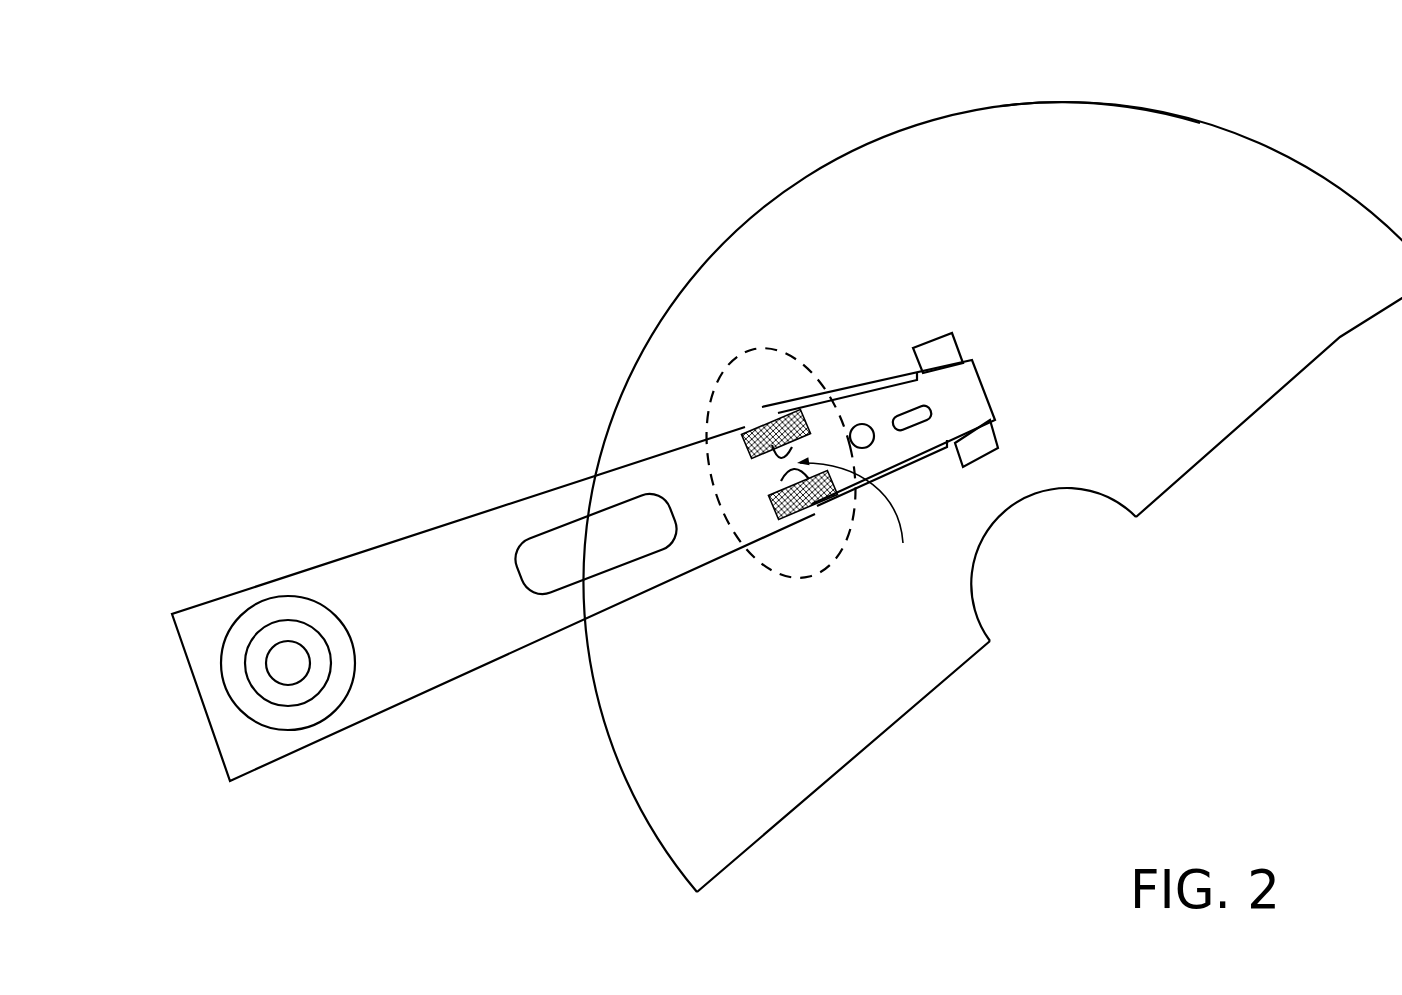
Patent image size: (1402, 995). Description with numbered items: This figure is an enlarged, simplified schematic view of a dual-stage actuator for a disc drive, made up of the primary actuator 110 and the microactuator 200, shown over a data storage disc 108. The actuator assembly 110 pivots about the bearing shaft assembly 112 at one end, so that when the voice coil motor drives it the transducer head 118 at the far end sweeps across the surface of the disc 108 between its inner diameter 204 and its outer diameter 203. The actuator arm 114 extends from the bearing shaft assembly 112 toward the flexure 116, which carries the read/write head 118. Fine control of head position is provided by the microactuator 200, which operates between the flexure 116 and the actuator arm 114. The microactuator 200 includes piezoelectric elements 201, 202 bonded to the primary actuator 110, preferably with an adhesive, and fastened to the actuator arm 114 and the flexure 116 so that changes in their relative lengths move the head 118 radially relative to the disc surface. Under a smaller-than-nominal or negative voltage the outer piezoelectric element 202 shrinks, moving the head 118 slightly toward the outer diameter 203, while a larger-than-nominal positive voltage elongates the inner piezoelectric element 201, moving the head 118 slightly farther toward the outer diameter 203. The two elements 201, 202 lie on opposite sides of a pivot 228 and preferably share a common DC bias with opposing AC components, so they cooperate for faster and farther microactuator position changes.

The data storage disc 108 is at (708, 756).
The actuator assembly 110 is at (633, 508).
The bearing shaft assembly 112 is at (288, 663).
The actuator arm 114 is at (443, 647).
The flexure 116 is at (970, 388).
The transducer head 118 is at (948, 337).
The microactuator 200 is at (750, 338).
The inner piezoelectric element 201 is at (802, 498).
The outer piezoelectric element 202 is at (770, 440).
The outer diameter 203 is at (1151, 100).
The inner diameter 204 is at (997, 525).
The pivot 228 is at (863, 519).